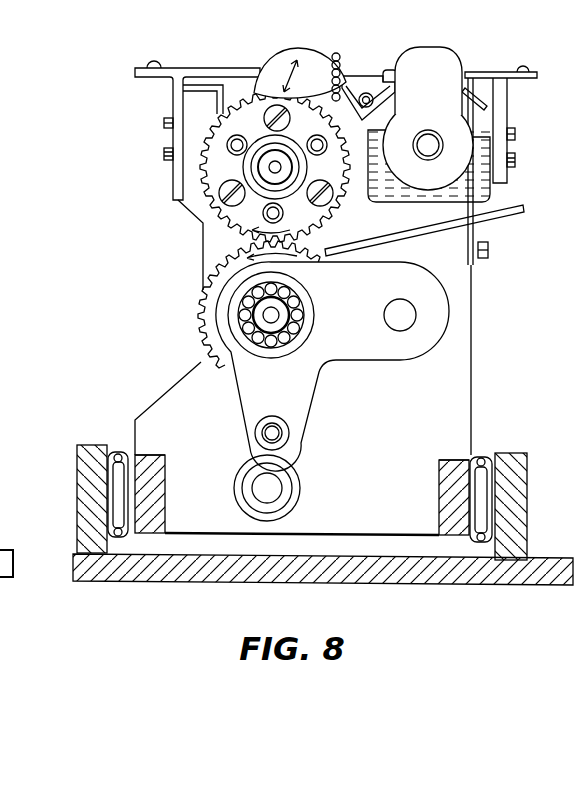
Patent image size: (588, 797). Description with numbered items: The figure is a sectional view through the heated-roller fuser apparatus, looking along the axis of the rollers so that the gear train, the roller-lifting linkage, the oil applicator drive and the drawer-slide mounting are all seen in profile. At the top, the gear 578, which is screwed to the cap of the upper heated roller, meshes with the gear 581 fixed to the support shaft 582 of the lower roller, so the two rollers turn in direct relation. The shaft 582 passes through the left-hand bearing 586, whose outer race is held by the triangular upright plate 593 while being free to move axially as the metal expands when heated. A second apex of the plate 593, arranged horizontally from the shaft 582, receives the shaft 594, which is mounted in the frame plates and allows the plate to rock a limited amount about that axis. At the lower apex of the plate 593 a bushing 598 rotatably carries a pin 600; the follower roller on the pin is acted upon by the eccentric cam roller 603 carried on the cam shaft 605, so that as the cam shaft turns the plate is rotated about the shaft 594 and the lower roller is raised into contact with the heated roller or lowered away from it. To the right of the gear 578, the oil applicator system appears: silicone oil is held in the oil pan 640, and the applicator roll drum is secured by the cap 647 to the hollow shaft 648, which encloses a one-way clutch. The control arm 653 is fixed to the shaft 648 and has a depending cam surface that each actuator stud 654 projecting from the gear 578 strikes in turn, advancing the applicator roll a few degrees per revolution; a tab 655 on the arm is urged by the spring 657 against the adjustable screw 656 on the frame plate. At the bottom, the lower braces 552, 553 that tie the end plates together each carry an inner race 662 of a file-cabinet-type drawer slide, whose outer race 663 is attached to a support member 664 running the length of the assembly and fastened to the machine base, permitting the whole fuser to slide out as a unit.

The lower brace 552 is at (166, 491).
The lower brace 553 is at (440, 505).
The gear 578 is at (203, 222).
The gear 581 is at (203, 270).
The support shaft 582 is at (282, 321).
The left-hand bearing 586 is at (304, 298).
The upright plate 593 is at (387, 361).
The shaft 594 is at (405, 300).
The bushing 598 is at (296, 424).
The pin 600 is at (282, 436).
The cam roller 603 is at (288, 511).
The cam shaft 605 is at (281, 480).
The oil pan 640 is at (491, 198).
The cap 647 is at (470, 127).
The hollow shaft 648 is at (424, 131).
The control arm 653 is at (368, 47).
The actuator stud 654 is at (386, 236).
The tab 655 is at (375, 73).
The adjustable screw 656 is at (397, 80).
The spring 657 is at (320, 51).
The inner race 662 is at (151, 460).
The outer race 663 is at (110, 471).
The support member 664 is at (77, 503).